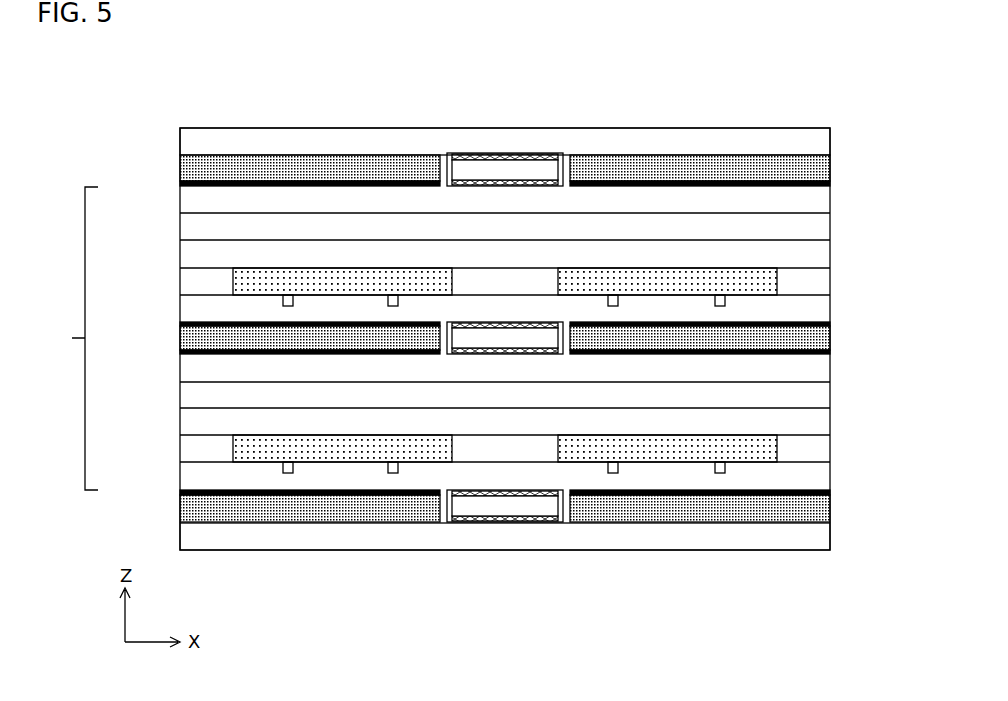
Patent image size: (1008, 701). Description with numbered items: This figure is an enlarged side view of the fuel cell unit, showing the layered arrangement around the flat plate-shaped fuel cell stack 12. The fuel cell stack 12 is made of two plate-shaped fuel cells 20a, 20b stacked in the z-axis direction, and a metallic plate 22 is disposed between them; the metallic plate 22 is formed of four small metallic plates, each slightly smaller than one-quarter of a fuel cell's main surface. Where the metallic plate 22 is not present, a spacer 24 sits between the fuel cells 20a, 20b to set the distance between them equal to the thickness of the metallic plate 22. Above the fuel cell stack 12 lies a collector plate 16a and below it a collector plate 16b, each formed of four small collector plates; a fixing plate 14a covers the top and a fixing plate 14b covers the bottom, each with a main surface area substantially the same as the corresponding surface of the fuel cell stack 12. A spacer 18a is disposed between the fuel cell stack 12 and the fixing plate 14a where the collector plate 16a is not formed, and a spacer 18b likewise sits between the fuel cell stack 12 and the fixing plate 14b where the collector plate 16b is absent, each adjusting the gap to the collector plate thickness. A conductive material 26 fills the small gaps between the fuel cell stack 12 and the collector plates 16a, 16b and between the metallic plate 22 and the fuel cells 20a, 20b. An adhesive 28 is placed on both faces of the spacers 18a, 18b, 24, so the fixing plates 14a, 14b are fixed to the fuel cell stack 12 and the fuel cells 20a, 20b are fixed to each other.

The fuel cell stack 12 is at (71, 338).
The fixing plate 14a is at (260, 128).
The fixing plate 14b is at (260, 550).
The collector plate 16a is at (157, 171).
The collector plate 16b is at (158, 517).
The spacer 18a is at (527, 168).
The spacer 18b is at (532, 508).
The fuel cell 20a is at (165, 187).
The fuel cell 20b is at (165, 355).
The metallic plate 22 is at (180, 340).
The spacer 24 is at (545, 335).
The conductive material 26 is at (805, 187).
The adhesive 28 is at (467, 563).